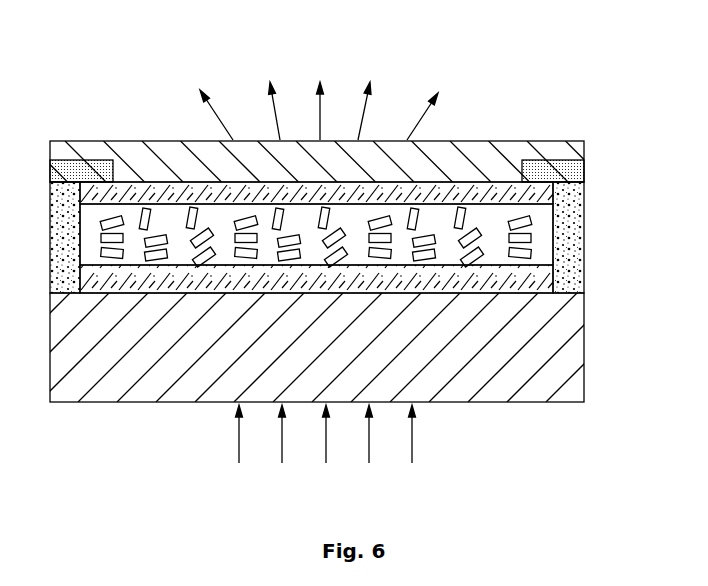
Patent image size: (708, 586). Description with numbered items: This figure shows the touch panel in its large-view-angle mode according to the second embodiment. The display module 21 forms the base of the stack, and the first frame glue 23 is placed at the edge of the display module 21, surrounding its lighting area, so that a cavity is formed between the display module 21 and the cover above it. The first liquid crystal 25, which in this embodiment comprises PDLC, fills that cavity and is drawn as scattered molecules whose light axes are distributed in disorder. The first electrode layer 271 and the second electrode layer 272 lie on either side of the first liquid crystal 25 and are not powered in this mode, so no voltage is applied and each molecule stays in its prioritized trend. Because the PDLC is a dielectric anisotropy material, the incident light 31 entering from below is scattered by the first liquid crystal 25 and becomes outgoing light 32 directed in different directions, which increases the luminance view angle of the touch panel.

The display module 21 is at (553, 332).
The first frame glue 23 is at (570, 270).
The first liquid crystal 25 is at (525, 227).
The first electrode layer 271 is at (120, 273).
The second electrode layer 272 is at (123, 190).
The incident light 31 is at (412, 441).
The outgoing light 32 is at (423, 114).